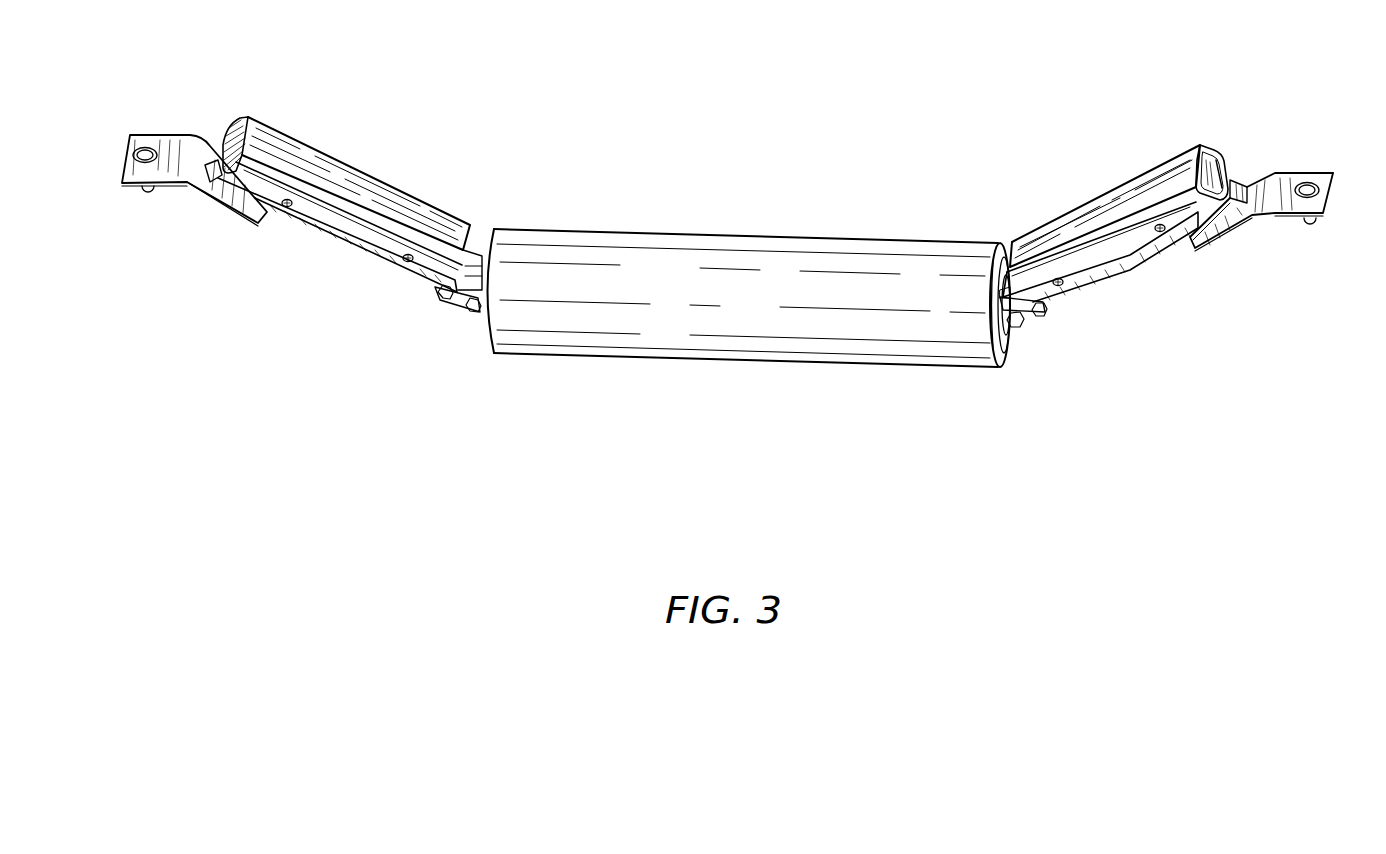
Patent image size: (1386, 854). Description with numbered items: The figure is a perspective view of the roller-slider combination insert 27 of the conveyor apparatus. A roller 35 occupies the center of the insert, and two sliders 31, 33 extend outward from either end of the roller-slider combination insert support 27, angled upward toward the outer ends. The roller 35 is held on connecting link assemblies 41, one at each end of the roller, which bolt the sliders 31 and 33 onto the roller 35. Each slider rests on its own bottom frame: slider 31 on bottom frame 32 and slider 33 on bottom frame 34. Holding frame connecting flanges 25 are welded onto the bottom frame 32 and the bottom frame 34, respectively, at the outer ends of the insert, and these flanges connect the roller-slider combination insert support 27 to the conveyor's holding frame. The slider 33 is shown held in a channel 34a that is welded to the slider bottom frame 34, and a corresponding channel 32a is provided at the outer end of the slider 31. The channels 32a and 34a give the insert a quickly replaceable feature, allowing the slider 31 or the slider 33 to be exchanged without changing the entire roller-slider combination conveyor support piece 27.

The holding frame connecting flange 25 is at (158, 137).
The roller-slider combination insert 27 is at (762, 145).
The slider 31 is at (308, 140).
The bottom frame 32 is at (355, 253).
The channel 32a is at (233, 137).
The slider 33 is at (1130, 177).
The bottom frame 34 is at (1107, 273).
The channel 34a is at (1227, 167).
The roller 35 is at (685, 362).
The connecting link assembly 41 is at (443, 337).